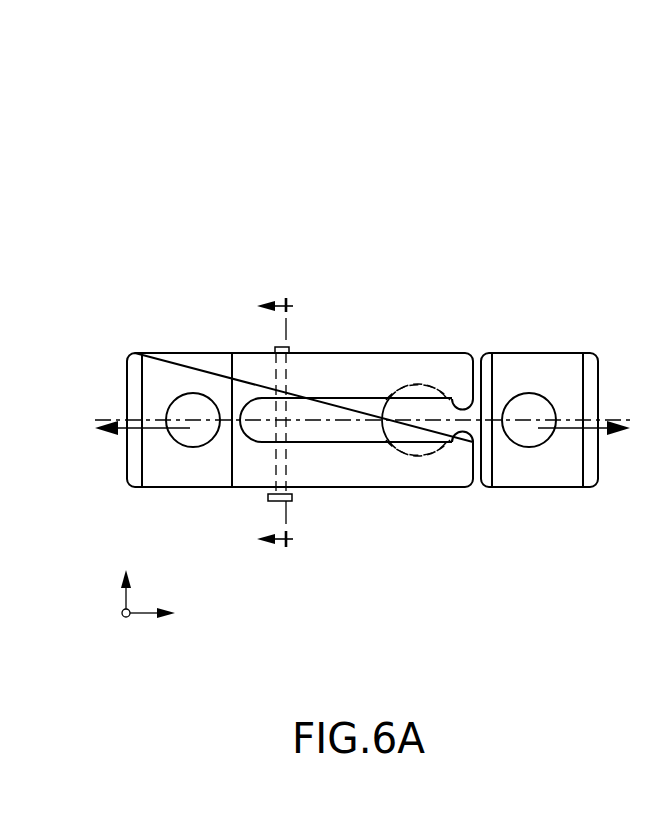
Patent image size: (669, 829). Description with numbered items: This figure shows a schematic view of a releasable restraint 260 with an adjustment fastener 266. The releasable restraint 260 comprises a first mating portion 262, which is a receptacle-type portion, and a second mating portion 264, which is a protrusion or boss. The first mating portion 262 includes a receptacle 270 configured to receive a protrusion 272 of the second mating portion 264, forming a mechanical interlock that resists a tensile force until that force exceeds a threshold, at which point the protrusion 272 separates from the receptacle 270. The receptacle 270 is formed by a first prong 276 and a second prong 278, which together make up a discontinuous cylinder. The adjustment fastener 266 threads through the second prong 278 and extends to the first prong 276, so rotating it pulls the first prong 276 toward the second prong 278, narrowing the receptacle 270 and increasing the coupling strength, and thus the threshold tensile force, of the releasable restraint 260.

The releasable restraint 260 is at (160, 150).
The first mating portion 262 is at (487, 250).
The second mating portion 264 is at (602, 563).
The adjustment fastener 266 is at (292, 501).
The receptacle 270 is at (416, 376).
The protrusion 272 is at (445, 490).
The first prong 276 is at (362, 373).
The second prong 278 is at (372, 476).